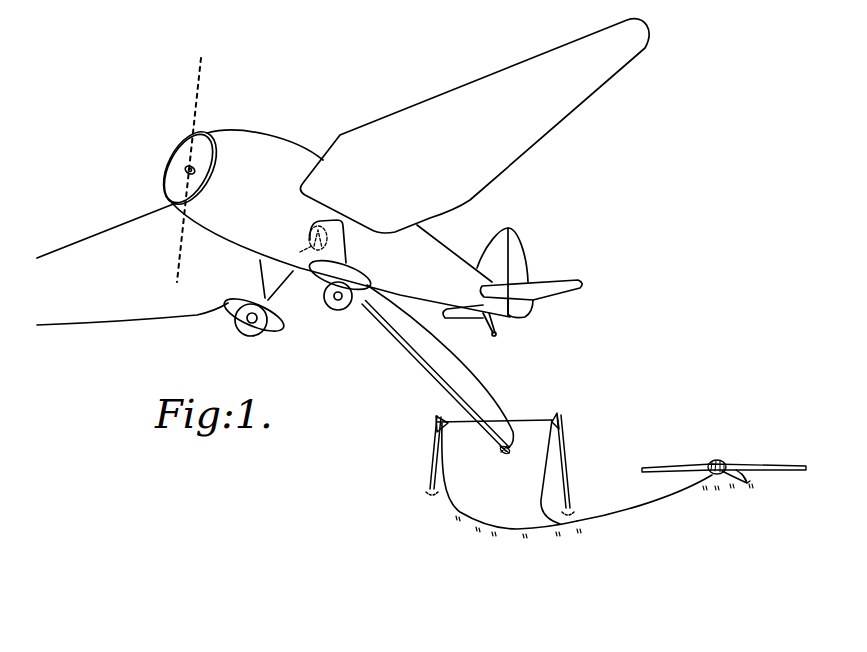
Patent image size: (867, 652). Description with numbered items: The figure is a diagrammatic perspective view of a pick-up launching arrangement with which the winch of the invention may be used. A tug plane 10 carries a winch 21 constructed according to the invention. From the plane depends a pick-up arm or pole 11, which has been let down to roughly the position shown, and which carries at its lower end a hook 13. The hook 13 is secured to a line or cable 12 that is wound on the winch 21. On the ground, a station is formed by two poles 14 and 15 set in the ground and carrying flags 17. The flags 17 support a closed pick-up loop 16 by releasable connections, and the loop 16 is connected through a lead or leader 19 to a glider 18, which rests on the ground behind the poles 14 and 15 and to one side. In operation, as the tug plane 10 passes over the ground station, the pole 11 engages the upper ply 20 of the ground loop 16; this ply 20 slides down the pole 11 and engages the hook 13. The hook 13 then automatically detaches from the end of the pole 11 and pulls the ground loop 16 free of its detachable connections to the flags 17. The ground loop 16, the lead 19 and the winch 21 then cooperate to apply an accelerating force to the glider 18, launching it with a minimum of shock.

The tug plane 10 is at (265, 137).
The pick-up arm or pole 11 is at (411, 355).
The line or cable 12 is at (468, 369).
The hook 13 is at (502, 452).
The pole 14 is at (430, 466).
The pole 15 is at (563, 467).
The pick-up loop 16 is at (507, 530).
The flags 17 is at (435, 422).
The glider 18 is at (723, 464).
The lead or leader 19 is at (653, 507).
The upper ply 20 is at (531, 420).
The winch 21 is at (304, 234).